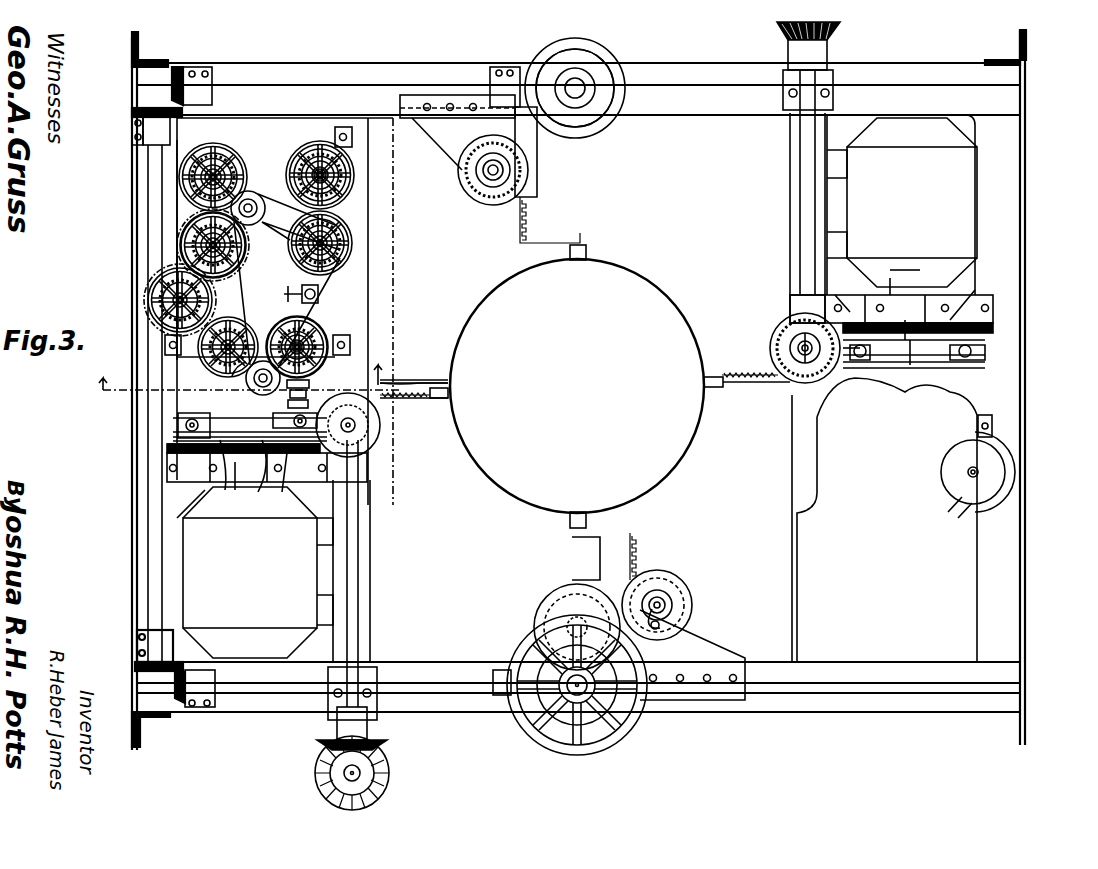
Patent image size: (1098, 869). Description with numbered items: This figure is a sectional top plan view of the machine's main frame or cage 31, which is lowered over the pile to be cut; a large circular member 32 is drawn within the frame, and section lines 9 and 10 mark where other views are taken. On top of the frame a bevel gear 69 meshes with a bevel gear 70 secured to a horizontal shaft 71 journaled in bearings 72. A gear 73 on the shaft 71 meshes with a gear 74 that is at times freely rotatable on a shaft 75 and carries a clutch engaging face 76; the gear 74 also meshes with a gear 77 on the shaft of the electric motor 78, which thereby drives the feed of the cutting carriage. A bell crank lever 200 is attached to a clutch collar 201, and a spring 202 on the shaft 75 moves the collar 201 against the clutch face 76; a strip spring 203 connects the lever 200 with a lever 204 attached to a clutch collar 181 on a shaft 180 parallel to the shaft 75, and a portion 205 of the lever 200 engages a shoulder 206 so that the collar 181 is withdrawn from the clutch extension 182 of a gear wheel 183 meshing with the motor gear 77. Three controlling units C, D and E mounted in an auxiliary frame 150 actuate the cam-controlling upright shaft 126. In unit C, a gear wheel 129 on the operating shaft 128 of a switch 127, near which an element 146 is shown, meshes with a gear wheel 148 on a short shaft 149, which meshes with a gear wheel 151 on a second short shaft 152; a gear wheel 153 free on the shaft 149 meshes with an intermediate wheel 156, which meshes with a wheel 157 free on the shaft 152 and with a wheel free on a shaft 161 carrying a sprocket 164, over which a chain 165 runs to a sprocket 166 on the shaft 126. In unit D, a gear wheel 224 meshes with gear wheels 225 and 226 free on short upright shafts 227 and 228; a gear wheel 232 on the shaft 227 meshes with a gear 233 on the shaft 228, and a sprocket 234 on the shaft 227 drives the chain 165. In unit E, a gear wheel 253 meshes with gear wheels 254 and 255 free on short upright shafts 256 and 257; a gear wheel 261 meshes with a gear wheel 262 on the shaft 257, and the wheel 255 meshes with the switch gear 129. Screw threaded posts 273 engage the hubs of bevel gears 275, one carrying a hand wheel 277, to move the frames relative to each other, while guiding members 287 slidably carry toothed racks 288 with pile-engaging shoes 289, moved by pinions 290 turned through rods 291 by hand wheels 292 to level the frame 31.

The section line 9 is at (249, 369).
The section line 10 is at (372, 119).
The main frame 31 is at (137, 514).
The disc 32 is at (685, 452).
The bevel gear 69 is at (777, 30).
The bevel gear 70 is at (832, 32).
The horizontal shaft 71 is at (358, 550).
The bearings 72 is at (365, 455).
The gear 73 is at (380, 425).
The gear 74 is at (870, 300).
The shaft 75 is at (395, 380).
The clutch engaging face 76 is at (531, 405).
The gear 77 is at (562, 408).
The electric motor 78 is at (986, 195).
The cam-controlling upright shaft 126 is at (258, 382).
The switch 127 is at (962, 472).
The operating shaft 128 is at (160, 292).
The gear wheel 129 is at (150, 300).
The bracket 146 is at (955, 508).
The gear wheel 148 is at (236, 252).
The short shaft 149 is at (232, 243).
The auxiliary frame 150 is at (177, 200).
The gear wheel 151 is at (222, 170).
The second short shaft 152 is at (240, 165).
The gear wheel 153 is at (242, 262).
The intermediate gear wheel 156 is at (177, 237).
The gear wheel 157 is at (232, 180).
The shaft 161 is at (250, 200).
The sprocket wheel 164 is at (266, 208).
The chain 165 is at (222, 272).
The sprocket 166 is at (262, 405).
The shaft 180 is at (178, 416).
The clutch collar 181 is at (185, 430).
The clutch extension 182 is at (185, 446).
The gear wheel 183 is at (167, 452).
The bell crank lever 200 is at (268, 420).
The clutch collar 201 is at (574, 392).
The spring 202 is at (392, 400).
The strip spring 203 is at (905, 279).
The lever 204 is at (990, 378).
The portion of lever 205 is at (985, 270).
The shoulder 206 is at (985, 288).
The gear wheel 224 is at (345, 186).
The gear wheel 225 is at (342, 262).
The gear wheel 226 is at (342, 166).
The short upright shaft 227 is at (340, 250).
The short upright shaft 228 is at (318, 150).
The gear wheel 232 is at (338, 226).
The gear 233 is at (340, 178).
The sprocket wheel 234 is at (342, 240).
The gear wheel 253 is at (322, 322).
The gear wheel 254 is at (330, 345).
The gear wheel 255 is at (177, 357).
The short upright shaft 256 is at (312, 335).
The short upright shaft 257 is at (240, 322).
The gear wheel 261 is at (282, 378).
The gear wheel 262 is at (300, 297).
The screw threaded posts 273 is at (590, 92).
The bevel gears 275 is at (598, 128).
The hand wheel 277 is at (632, 727).
The guiding members 287 is at (540, 190).
The toothed racks 288 is at (530, 206).
The pile-engaging shoes 289 is at (586, 252).
The pinions 290 is at (487, 188).
The rods 291 is at (480, 172).
The hand wheels 292 is at (525, 168).
The controlling unit C is at (171, 212).
The controlling unit D is at (351, 206).
The controlling unit E is at (260, 312).